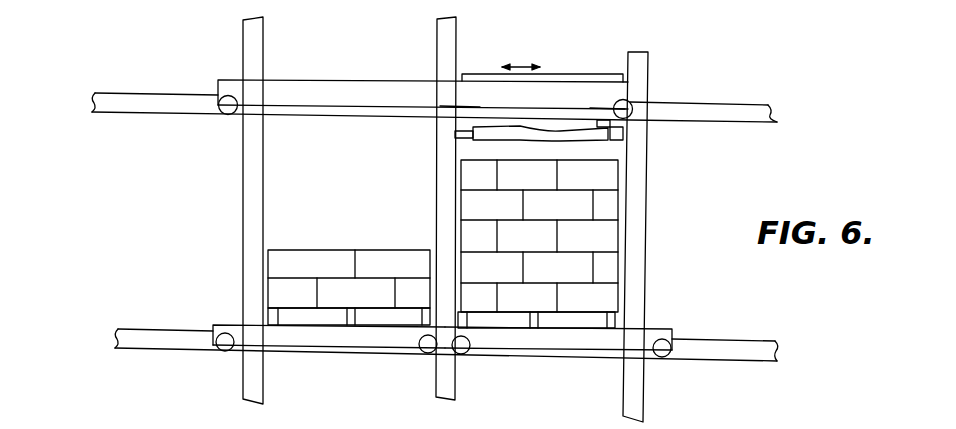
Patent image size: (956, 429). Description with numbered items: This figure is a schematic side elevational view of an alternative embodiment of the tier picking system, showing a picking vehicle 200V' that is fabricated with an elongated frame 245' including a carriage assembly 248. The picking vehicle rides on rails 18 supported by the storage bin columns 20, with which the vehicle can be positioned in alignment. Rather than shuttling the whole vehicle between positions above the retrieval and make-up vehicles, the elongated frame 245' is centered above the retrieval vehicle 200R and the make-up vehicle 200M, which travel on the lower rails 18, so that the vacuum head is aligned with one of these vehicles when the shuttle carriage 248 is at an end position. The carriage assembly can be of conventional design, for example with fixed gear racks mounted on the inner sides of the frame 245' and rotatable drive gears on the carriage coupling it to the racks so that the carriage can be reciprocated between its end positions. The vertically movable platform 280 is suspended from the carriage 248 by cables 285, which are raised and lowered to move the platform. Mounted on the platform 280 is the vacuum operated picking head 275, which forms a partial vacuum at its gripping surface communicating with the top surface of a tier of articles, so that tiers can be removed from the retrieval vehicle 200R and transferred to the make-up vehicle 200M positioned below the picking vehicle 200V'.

The rails 18 is at (752, 125).
The storage bin column 20 is at (263, 50).
The elongated frame 245' is at (425, 81).
The carriage assembly 248 is at (578, 75).
The support cables 285 is at (463, 115).
The vertically movable platform 280 is at (624, 133).
The picking head 275 is at (616, 141).
The picking vehicle 200V' is at (466, 100).
The make-up vehicle 200M is at (333, 355).
The retrieval vehicle 200R is at (492, 355).